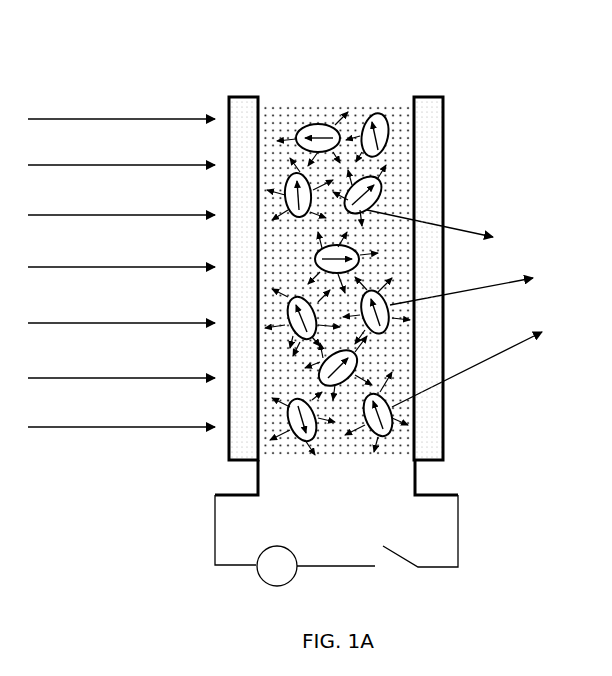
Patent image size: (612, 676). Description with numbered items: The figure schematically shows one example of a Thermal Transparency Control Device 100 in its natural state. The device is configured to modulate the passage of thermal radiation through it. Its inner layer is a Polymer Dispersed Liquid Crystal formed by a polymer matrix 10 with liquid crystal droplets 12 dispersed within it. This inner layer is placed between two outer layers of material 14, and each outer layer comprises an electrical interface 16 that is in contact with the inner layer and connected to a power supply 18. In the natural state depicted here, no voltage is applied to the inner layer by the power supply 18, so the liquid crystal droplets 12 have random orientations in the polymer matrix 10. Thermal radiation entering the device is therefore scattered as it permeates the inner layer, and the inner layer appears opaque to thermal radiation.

The Thermal Transparency Control Device 100 is at (140, 31).
The polymer matrix 10 is at (320, 106).
The liquid crystal droplets 12 is at (366, 114).
The outer layers of material 14 is at (245, 97).
The electrical interface 16 is at (258, 468).
The power supply 18 is at (215, 545).